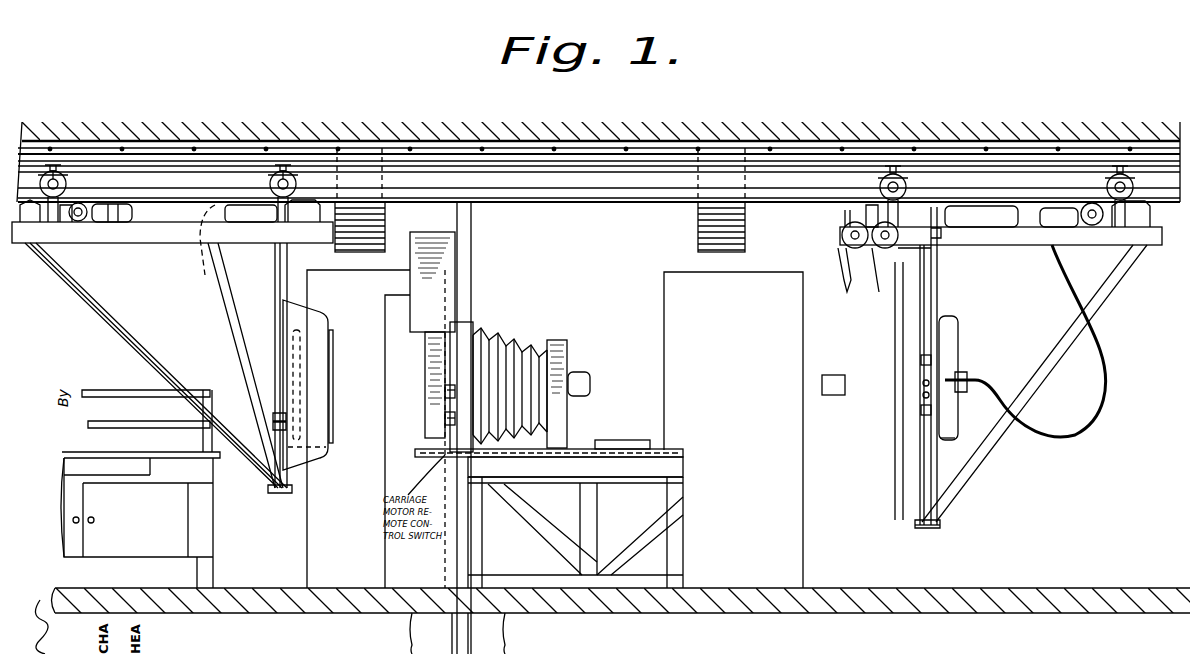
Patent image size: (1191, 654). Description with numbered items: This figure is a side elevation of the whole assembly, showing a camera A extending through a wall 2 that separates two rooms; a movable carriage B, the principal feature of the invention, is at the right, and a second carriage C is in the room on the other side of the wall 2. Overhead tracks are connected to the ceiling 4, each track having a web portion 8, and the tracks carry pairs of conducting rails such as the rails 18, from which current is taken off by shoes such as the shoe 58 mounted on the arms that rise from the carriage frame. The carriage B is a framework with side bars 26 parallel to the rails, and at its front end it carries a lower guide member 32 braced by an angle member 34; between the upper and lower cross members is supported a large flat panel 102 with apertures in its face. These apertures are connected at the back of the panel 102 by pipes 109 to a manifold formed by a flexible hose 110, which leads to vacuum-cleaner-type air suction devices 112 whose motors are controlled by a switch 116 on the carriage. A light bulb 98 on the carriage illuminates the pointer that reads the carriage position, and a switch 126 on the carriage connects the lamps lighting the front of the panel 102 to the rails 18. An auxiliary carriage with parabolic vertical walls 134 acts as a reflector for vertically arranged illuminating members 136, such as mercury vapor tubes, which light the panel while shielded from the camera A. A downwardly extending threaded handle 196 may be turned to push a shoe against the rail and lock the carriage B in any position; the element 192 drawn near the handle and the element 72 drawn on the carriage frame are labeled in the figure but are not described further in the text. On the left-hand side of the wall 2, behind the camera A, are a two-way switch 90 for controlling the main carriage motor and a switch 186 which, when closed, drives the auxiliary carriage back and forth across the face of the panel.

The ceiling 4 is at (810, 137).
The conducting rails 18 is at (682, 166).
The web portion 8 is at (806, 178).
The light bulb 98 is at (928, 212).
The shoe 58 is at (1128, 190).
The air suction devices 112 is at (997, 222).
The side bars 26 is at (1018, 245).
The drive unit 72 is at (1100, 226).
The panel 102 is at (940, 291).
The handle 196 is at (841, 280).
The lamp 192 is at (850, 283).
The pipes 109 is at (960, 340).
The illuminating members 136 is at (910, 365).
The switch 116 is at (940, 362).
The switch 126 is at (921, 410).
The vertical walls 134 is at (905, 448).
The angle member 34 is at (978, 468).
The lower guide member 32 is at (930, 528).
The flexible hose 110 is at (1072, 430).
The wall 2 is at (471, 252).
The switch 186 is at (446, 391).
The two-way switch 90 is at (446, 418).
The camera A is at (505, 345).
The movable carriage B is at (940, 438).
The second carriage C is at (318, 455).